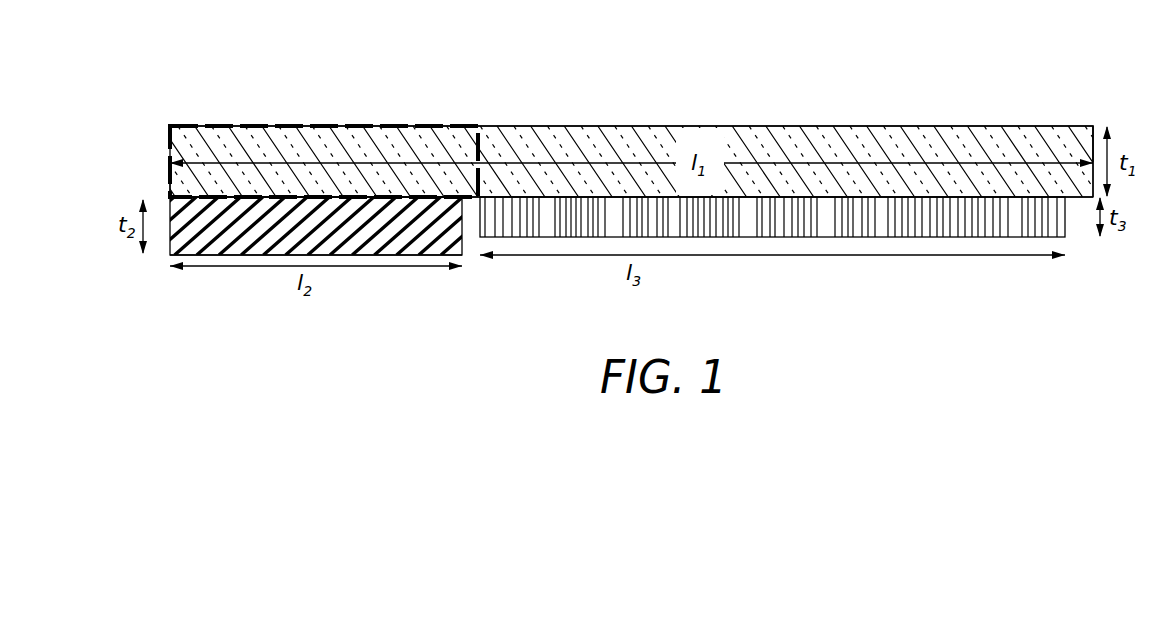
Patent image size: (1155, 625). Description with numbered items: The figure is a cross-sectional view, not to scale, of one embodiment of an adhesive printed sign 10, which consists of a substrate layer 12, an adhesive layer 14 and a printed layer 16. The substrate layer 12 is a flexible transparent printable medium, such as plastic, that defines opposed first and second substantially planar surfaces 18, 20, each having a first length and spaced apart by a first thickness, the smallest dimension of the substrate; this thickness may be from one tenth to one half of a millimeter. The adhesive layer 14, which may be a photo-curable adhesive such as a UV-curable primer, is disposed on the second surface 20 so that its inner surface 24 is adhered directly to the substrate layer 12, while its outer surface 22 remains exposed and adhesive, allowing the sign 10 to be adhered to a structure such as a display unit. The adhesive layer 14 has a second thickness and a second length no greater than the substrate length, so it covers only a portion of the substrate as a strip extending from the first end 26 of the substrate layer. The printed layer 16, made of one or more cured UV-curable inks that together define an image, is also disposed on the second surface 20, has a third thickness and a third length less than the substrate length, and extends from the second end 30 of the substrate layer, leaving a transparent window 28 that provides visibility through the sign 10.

The adhesive printed sign 10 is at (629, 73).
The substrate layer 12 is at (199, 148).
The adhesive layer 14 is at (199, 238).
The printed layer 16 is at (1065, 233).
The first surface 18 is at (533, 126).
The second surface 20 is at (830, 200).
The outer surface 22 is at (393, 256).
The inner surface 24 is at (331, 202).
The first end 26 is at (170, 190).
The transparent window 28 is at (349, 121).
The second end 30 is at (1093, 126).